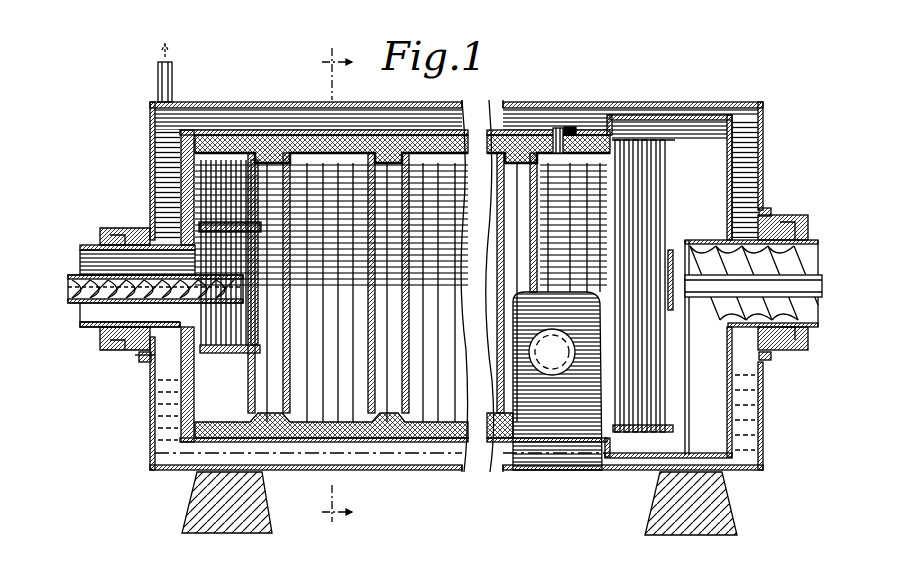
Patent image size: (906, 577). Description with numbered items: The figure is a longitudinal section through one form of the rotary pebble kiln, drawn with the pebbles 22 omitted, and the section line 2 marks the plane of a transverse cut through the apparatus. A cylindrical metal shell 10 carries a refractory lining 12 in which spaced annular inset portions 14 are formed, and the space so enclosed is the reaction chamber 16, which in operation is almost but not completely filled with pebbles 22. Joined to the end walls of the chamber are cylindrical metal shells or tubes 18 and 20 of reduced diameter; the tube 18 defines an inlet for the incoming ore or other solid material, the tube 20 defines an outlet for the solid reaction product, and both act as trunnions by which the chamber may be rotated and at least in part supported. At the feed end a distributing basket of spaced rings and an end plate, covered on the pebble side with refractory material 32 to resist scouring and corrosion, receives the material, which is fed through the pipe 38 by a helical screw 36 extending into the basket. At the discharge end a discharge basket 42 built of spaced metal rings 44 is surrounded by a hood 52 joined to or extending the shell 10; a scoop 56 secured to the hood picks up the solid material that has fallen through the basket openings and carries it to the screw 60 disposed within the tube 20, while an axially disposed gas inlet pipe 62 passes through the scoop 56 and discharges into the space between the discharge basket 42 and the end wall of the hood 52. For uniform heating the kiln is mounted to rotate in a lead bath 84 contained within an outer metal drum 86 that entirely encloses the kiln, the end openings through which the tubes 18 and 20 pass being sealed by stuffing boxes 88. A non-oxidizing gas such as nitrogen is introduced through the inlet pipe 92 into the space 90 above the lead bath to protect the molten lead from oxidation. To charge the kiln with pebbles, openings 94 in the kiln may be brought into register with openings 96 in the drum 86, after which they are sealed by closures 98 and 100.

The section line 2- 2 is at (339, 285).
The cylindrical metal shell 10 is at (237, 137).
The refractory lining 12 is at (152, 163).
The annular inset portions 14 is at (177, 183).
The reaction chamber 16 is at (343, 405).
The inlet tube 18 is at (95, 332).
The outlet tube 20 is at (773, 227).
The pebbles 22 is at (230, 238).
The refractory material 32 is at (262, 343).
The helical screw 36 is at (90, 300).
The pipe 38 is at (78, 275).
The discharge basket 42 is at (653, 193).
The spaced metal rings 44 is at (668, 103).
The hood 52 is at (737, 163).
The scoop 56 is at (702, 383).
The screw 60 is at (800, 340).
The gas inlet pipe 62 is at (790, 278).
The lead bath 84 is at (165, 410).
The outer metal drum 86 is at (150, 397).
The stuffing boxes 88 is at (140, 352).
The space above lead bath 90 is at (177, 128).
The inlet pipe 92 is at (172, 78).
The openings 94 is at (588, 112).
The openings 96 is at (580, 468).
The closure 98 is at (558, 130).
The closure 100 is at (552, 375).